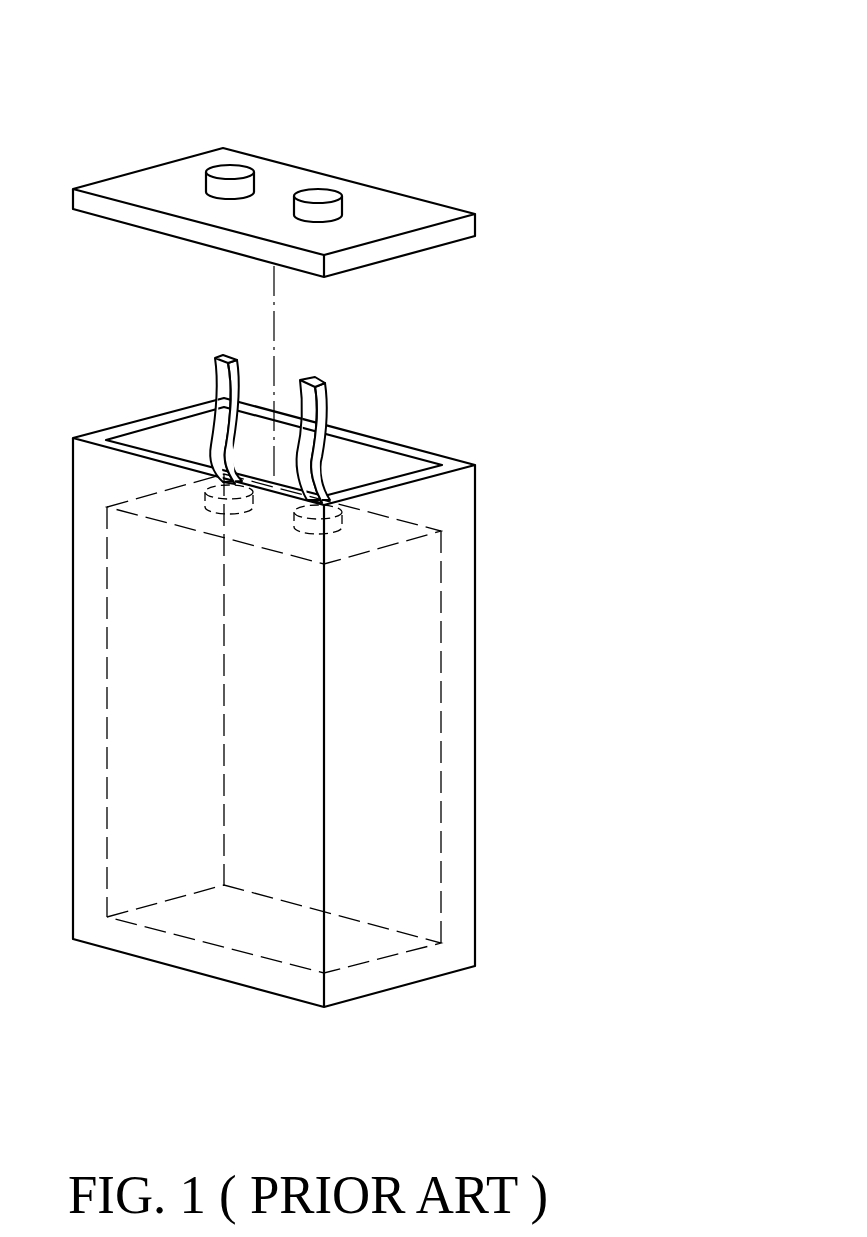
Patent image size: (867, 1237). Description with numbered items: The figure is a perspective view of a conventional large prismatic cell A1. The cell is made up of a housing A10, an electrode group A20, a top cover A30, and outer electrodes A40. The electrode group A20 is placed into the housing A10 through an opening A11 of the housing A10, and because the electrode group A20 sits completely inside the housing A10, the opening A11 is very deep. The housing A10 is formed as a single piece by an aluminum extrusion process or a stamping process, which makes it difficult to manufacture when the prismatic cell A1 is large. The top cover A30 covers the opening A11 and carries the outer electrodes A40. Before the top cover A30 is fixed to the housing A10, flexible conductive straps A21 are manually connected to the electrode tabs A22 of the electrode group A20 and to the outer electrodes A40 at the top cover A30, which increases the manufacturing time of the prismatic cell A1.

The prismatic cell A1 is at (545, 42).
The housing A10 is at (330, 687).
The opening A11 is at (393, 465).
The electrode group A20 is at (332, 665).
The flexible conductive straps A21 is at (223, 389).
The electrode tabs A22 is at (205, 489).
The top cover A30 is at (303, 189).
The outer electrodes A40 is at (347, 197).